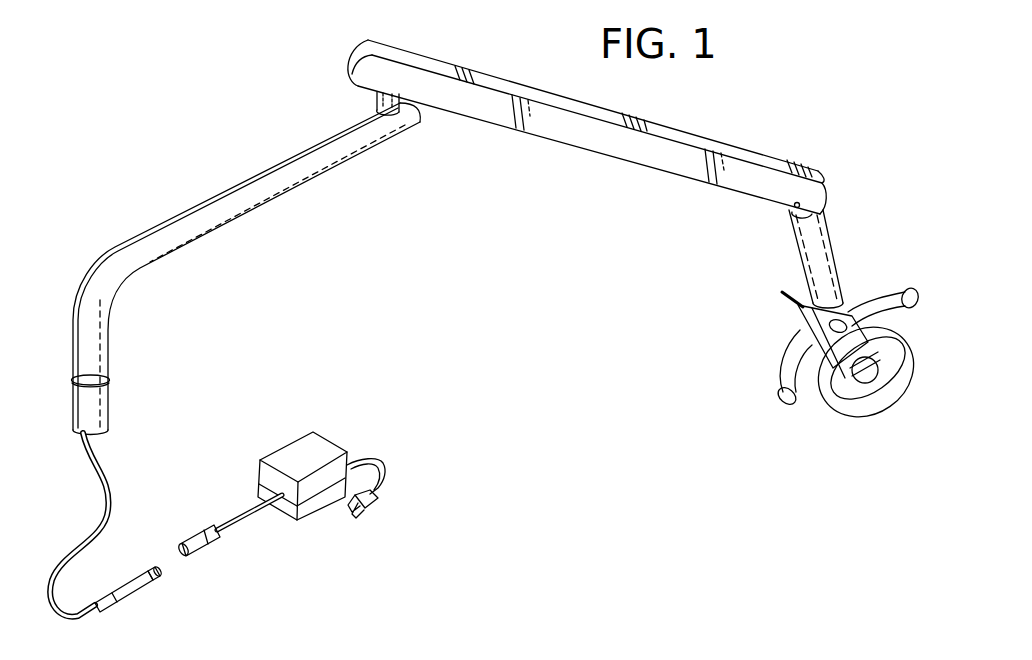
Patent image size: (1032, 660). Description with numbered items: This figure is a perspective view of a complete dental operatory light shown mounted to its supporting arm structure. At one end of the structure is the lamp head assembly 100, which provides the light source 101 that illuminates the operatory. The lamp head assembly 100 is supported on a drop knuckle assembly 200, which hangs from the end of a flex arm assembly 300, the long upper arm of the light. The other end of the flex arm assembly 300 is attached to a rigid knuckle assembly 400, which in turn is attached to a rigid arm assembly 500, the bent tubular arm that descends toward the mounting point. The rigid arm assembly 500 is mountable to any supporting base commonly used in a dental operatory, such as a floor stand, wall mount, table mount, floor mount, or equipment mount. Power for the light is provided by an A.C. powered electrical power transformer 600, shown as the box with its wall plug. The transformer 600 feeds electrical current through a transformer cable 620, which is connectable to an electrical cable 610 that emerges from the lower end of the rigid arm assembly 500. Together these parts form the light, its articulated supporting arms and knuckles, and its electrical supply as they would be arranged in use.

The lamp head assembly 100 is at (789, 376).
The light source 101 is at (842, 412).
The drop knuckle assembly 200 is at (797, 251).
The flex arm assembly 300 is at (610, 152).
The rigid knuckle assembly 400 is at (365, 100).
The rigid arm assembly 500 is at (247, 203).
The electrical power transformer 600 is at (327, 442).
The electrical cable 610 is at (110, 481).
The transformer cable 620 is at (241, 513).